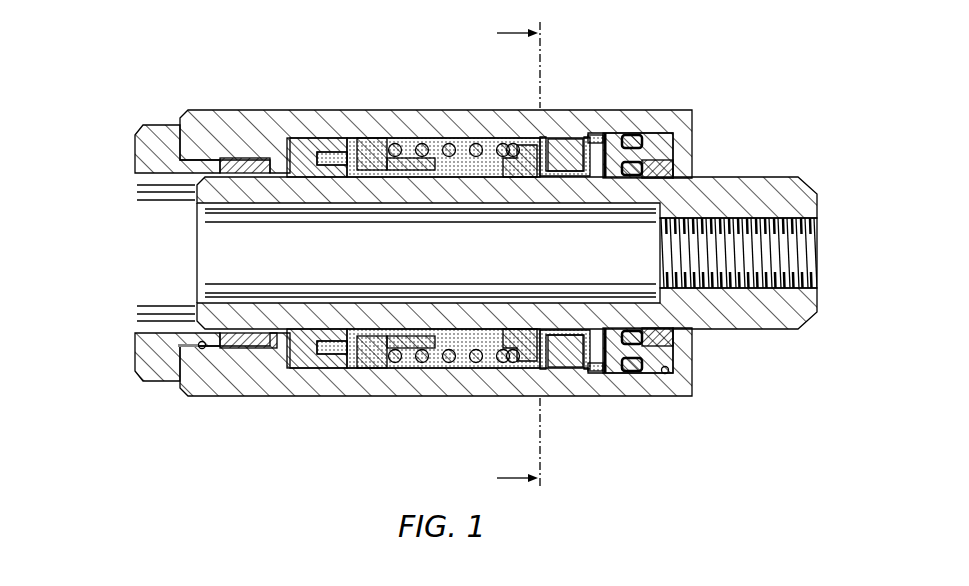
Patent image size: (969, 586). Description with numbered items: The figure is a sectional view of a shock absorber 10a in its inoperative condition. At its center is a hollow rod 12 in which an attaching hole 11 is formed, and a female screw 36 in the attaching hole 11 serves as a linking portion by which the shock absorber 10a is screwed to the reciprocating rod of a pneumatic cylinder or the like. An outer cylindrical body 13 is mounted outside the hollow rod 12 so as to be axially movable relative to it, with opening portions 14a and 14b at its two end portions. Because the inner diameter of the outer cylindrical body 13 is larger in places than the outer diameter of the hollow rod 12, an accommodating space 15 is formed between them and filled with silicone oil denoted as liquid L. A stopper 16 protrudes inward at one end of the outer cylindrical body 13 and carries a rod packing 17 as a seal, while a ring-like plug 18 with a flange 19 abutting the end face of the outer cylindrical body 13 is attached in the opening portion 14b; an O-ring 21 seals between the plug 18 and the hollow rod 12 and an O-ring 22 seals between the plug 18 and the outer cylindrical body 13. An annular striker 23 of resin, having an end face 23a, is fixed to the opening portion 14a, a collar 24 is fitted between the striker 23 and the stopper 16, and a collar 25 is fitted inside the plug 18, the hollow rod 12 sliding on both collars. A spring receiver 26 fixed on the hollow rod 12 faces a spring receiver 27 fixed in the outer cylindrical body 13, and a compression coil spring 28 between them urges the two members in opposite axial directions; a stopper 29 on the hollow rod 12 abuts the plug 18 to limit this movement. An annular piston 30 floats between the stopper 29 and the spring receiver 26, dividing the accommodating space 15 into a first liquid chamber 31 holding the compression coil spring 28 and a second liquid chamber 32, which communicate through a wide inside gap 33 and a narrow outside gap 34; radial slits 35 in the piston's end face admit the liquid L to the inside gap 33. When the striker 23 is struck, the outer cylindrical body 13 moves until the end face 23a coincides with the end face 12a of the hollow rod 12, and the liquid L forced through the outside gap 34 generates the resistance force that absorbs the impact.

The shock absorber 10a is at (765, 94).
The attaching hole 11 is at (650, 200).
The hollow rod 12 is at (782, 318).
The end face of the hollow rod 12a is at (190, 311).
The outer cylindrical body 13 is at (455, 138).
The opening portion 14a is at (202, 350).
The opening portion 14b is at (665, 375).
The accommodating space 15 is at (440, 367).
The stopper 16 is at (278, 350).
The rod packing 17 is at (320, 370).
The ring-like plug 18 is at (625, 368).
The flange 19 is at (693, 380).
The O-ring 21 is at (638, 218).
The O-ring 22 is at (630, 135).
The annular striker 23 is at (160, 125).
The end face of the striker 23a is at (135, 343).
The collar 24 is at (243, 160).
The collar 25 is at (696, 170).
The annular spring receiver 26 is at (525, 145).
The annular spring receiver 27 is at (372, 140).
The compression coil spring 28 is at (418, 140).
The stopper 29 is at (597, 135).
The annular piston 30 is at (568, 140).
The first liquid chamber 31 is at (396, 363).
The second liquid chamber 32 is at (601, 372).
The inside gap 33 is at (546, 370).
The outside gap 34 is at (558, 372).
The slits 35 is at (555, 138).
The female screw 36 is at (802, 258).
The liquid L is at (490, 368).